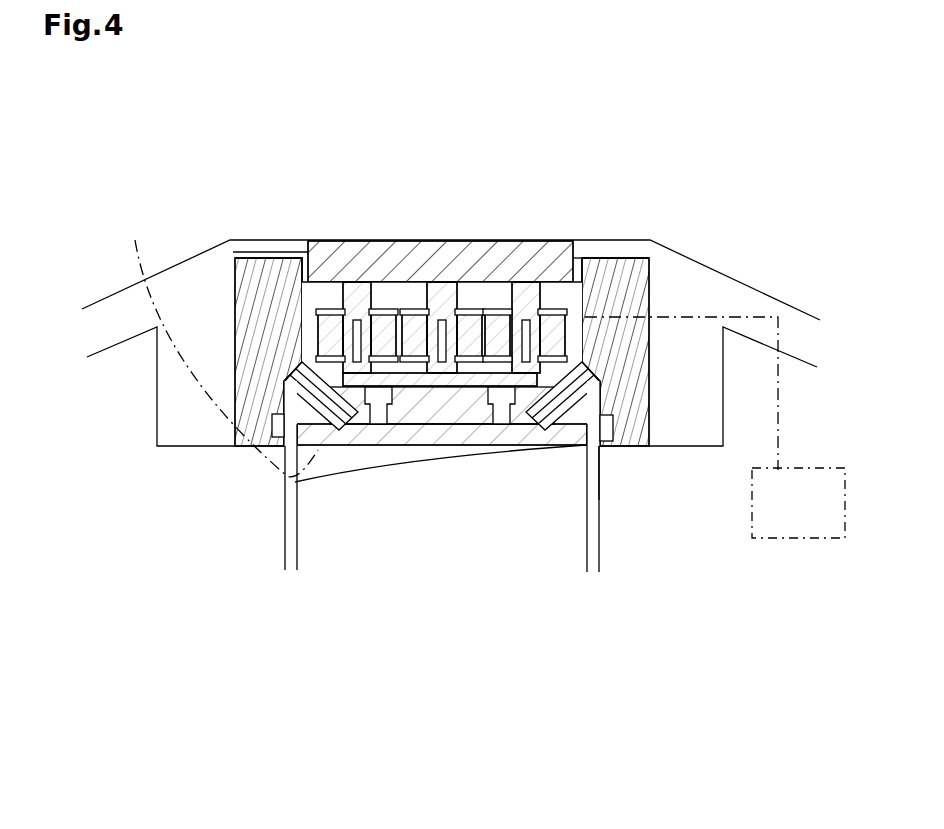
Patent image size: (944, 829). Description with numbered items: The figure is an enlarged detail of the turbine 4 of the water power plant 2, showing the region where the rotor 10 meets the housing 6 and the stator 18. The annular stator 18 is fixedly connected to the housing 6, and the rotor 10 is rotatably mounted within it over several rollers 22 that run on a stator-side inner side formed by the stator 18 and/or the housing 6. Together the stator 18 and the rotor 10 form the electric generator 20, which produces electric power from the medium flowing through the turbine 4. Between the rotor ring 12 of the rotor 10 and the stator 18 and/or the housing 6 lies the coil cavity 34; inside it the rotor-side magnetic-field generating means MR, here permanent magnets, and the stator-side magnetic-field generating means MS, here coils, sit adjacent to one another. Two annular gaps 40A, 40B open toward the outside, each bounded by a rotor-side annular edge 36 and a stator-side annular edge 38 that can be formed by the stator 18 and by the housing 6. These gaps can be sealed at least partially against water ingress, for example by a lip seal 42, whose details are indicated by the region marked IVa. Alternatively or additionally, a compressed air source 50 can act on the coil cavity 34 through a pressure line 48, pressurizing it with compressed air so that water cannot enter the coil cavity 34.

The turbine 4 is at (672, 141).
The housing 6 is at (733, 291).
The water power plant 2 is at (452, 420).
The electric generator 20 is at (306, 362).
The stator 18 is at (352, 297).
The stator-side magnetic-field generating means MS is at (415, 308).
The coil cavity 34 is at (560, 297).
The rotor-side magnetic-field generating means MR is at (445, 378).
The rollers 22 is at (352, 425).
The rotor-side annular edge 36 is at (297, 478).
The stator-side annular edge 38 is at (290, 455).
The lip seal 42 is at (293, 437).
The annular gap 40A is at (288, 495).
The annular gap 40B is at (595, 510).
The rotor ring 12 is at (593, 492).
The rotor 10 is at (498, 543).
The detail section line IVa is at (218, 344).
The pressure line 48 is at (713, 393).
The compressed air source 50 is at (816, 518).